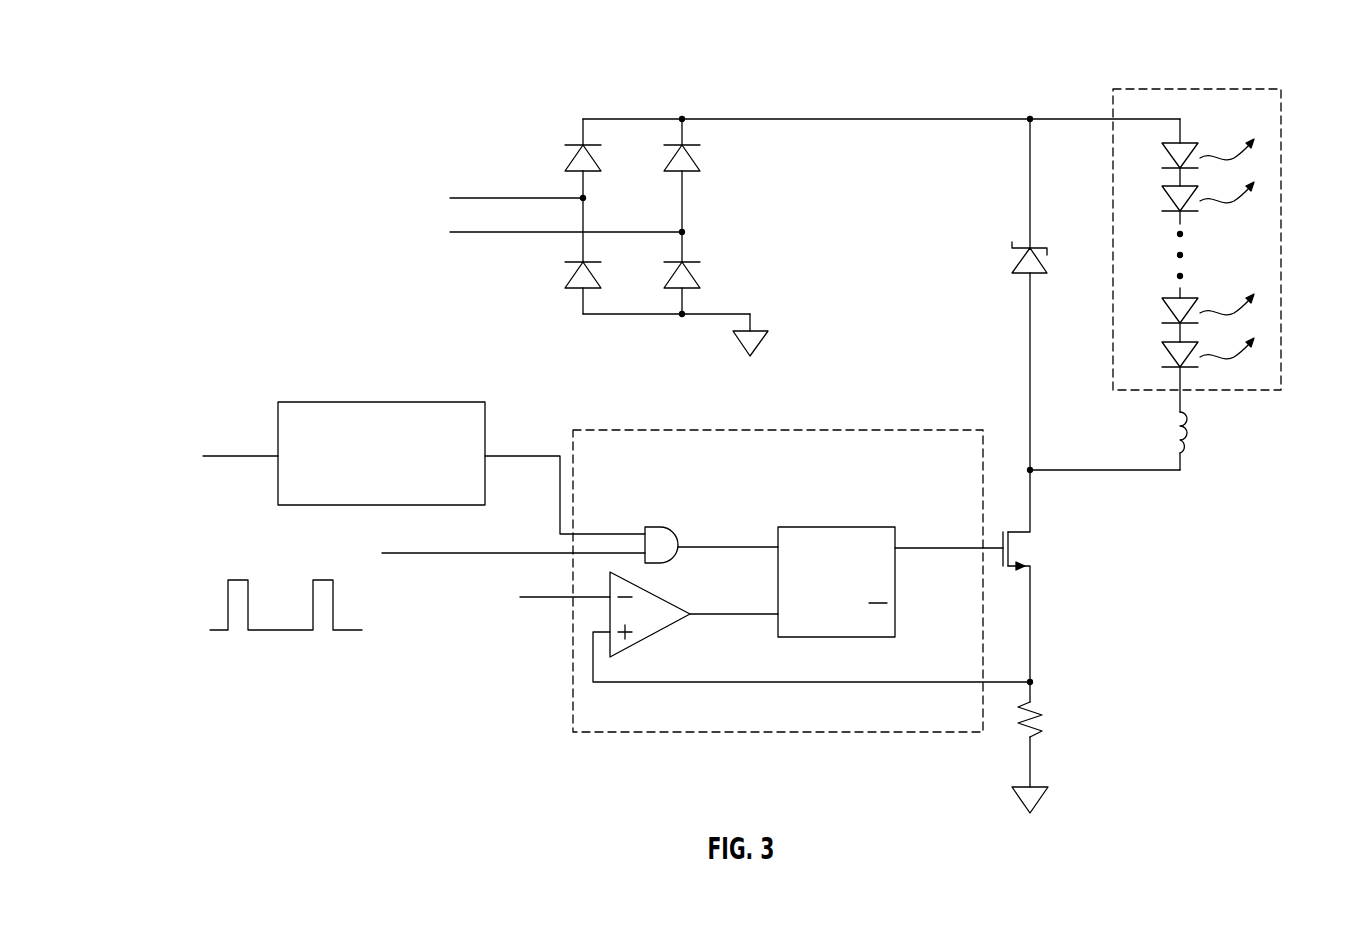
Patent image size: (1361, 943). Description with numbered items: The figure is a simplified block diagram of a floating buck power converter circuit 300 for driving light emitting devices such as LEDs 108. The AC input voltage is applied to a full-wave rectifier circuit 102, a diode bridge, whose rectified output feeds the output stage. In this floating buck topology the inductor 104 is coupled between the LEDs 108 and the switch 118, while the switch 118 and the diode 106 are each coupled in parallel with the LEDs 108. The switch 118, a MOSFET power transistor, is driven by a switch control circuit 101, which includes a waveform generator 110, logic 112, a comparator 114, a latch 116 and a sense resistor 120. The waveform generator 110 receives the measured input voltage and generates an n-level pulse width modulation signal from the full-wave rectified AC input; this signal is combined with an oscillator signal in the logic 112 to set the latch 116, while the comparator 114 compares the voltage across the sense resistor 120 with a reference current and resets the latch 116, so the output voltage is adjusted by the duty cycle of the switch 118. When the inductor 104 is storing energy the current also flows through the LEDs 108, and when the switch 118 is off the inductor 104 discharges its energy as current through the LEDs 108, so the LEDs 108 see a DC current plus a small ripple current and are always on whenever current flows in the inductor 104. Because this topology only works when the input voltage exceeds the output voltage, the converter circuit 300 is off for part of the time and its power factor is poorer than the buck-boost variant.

The floating buck power converter circuit 300 is at (663, 30).
The switch control circuit 101 is at (573, 430).
The full-wave rectifier circuit 102 is at (696, 191).
The inductor 104 is at (1187, 432).
The diode 106 is at (1012, 271).
The LEDs 108 is at (1283, 90).
The waveform generator 110 is at (388, 402).
The logic 112 is at (668, 527).
The comparator 114 is at (675, 606).
The latch 116 is at (845, 527).
The switch 118 is at (1012, 556).
The sense resistor 120 is at (1035, 735).